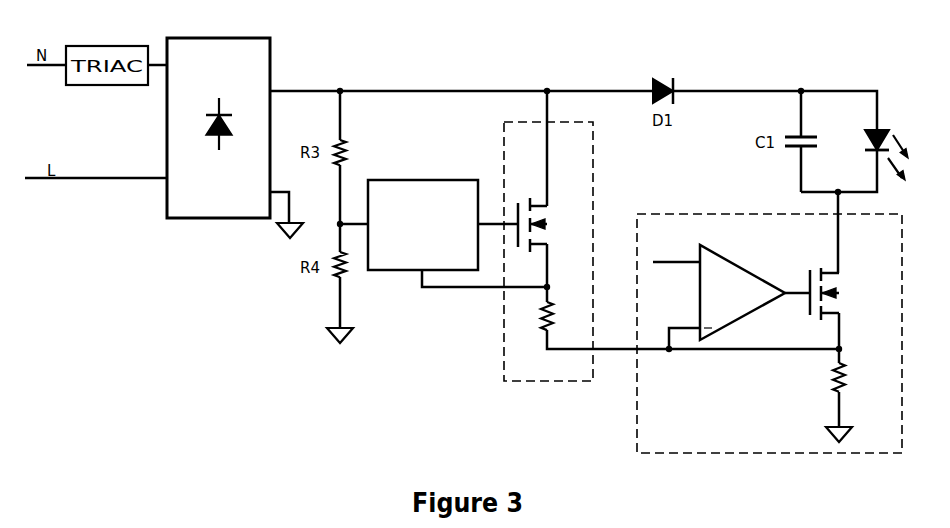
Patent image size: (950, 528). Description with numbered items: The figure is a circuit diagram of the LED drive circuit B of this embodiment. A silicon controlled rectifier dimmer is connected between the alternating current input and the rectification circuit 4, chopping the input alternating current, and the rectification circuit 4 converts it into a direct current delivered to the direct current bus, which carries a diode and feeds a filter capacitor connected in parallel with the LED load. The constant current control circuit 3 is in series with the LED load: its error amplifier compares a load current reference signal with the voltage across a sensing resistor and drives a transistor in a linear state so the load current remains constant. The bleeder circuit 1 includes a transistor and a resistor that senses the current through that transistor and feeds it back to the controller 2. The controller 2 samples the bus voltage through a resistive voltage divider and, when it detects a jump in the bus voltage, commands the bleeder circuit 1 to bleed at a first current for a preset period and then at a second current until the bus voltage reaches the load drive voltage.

The bleeder circuit 1 is at (504, 373).
The controller 2 is at (443, 180).
The constant current control circuit 3 is at (636, 452).
The rectification circuit 4 is at (270, 58).
The LED drive circuit B is at (236, 374).